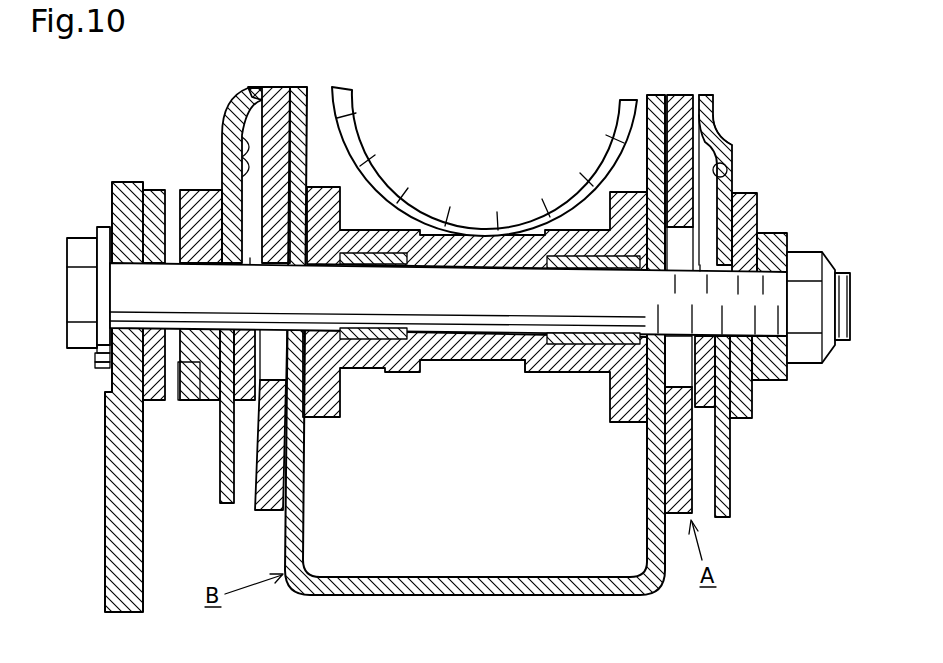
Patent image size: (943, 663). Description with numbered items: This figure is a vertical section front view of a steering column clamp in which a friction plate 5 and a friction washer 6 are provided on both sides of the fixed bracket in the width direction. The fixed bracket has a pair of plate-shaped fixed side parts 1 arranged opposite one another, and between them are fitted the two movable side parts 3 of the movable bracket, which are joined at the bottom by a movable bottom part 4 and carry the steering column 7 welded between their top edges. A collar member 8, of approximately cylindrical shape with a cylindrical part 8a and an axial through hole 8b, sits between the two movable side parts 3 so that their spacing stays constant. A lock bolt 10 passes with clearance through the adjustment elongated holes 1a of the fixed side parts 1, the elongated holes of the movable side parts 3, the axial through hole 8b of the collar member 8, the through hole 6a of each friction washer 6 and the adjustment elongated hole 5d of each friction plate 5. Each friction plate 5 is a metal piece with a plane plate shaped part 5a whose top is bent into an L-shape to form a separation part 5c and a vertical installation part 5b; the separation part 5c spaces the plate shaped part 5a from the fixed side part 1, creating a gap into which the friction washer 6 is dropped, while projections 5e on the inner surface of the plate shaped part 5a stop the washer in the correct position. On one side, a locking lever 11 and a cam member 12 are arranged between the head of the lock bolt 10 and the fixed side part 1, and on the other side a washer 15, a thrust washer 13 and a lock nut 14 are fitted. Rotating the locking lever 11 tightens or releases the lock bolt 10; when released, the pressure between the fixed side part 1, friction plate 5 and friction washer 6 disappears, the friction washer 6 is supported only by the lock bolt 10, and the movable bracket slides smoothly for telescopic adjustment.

The fixed side part 1 is at (263, 515).
The adjustment elongated hole 1a is at (278, 362).
The movable side part 3 is at (306, 536).
The movable bottom part 4 is at (476, 577).
The friction plate 5 is at (217, 484).
The plate shaped part 5a is at (746, 194).
The installation part 5b is at (714, 97).
The separation part 5c is at (723, 133).
The adjustment elongated hole 5d is at (230, 242).
The projection 5e is at (236, 128).
The friction washer 6 is at (243, 402).
The through hole 6a is at (250, 263).
The steering column 7 is at (368, 150).
The collar member 8 is at (383, 374).
The cylindrical part 8a is at (540, 373).
The axial through hole 8b is at (445, 342).
The lock bolt 10 is at (453, 310).
The locking lever 11 is at (143, 556).
The cam member 12 is at (195, 184).
The thrust washer 13 is at (772, 388).
The lock nut 14 is at (797, 252).
The washer 15 is at (762, 233).